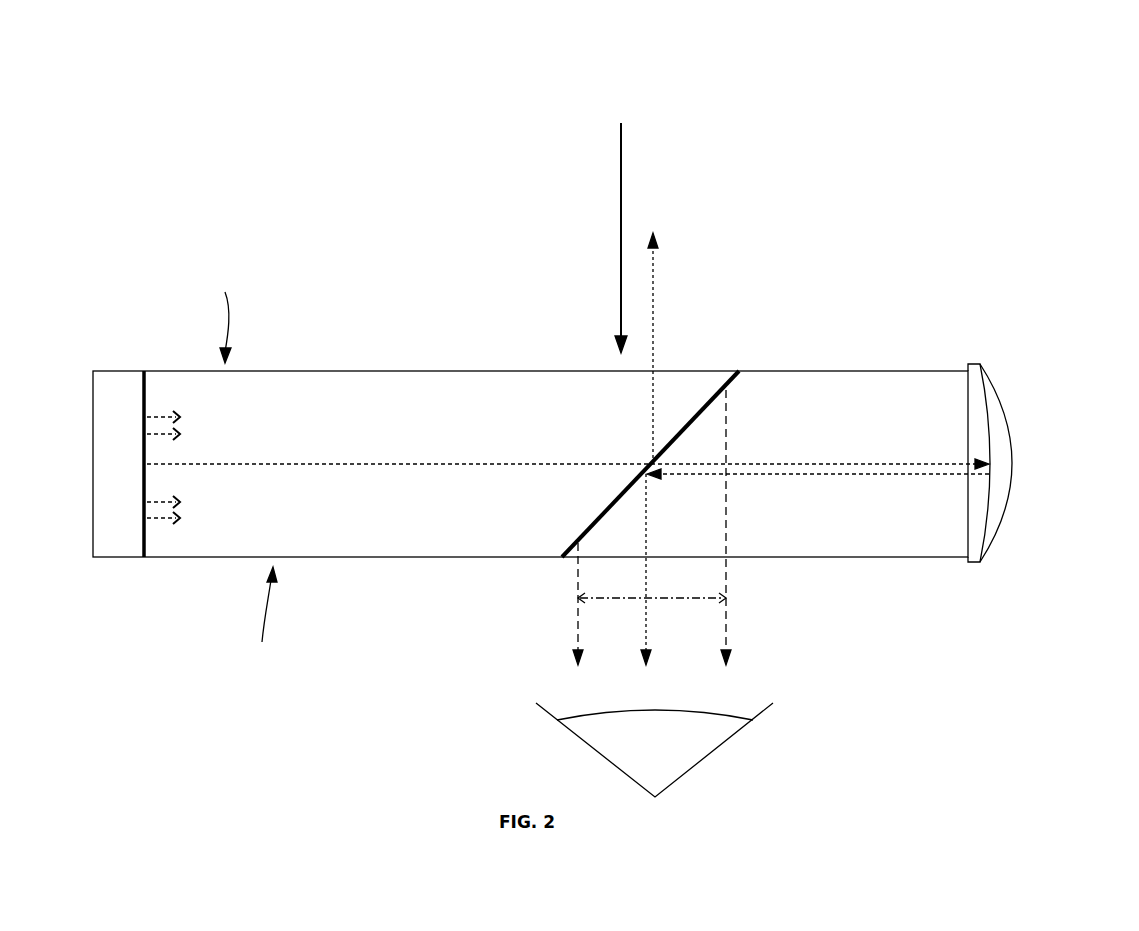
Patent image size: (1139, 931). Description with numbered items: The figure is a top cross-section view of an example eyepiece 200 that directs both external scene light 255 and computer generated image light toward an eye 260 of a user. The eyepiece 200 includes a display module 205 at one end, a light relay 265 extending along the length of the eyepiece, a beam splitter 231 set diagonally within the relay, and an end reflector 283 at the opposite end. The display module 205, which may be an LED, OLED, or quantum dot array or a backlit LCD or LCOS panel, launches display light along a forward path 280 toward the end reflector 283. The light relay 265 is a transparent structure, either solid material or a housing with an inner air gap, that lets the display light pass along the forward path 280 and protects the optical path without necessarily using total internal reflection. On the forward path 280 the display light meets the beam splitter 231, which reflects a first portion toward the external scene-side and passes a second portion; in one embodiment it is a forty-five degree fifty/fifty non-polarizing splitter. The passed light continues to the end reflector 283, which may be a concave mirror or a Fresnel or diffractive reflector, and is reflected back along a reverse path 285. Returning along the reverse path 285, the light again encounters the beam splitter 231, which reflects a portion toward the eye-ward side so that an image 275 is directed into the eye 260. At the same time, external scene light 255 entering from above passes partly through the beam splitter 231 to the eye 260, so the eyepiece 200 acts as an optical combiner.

The eyepiece 200 is at (935, 85).
The display module 205 is at (110, 370).
The beam splitter 231 is at (697, 405).
The external scene light 255 is at (621, 195).
The eye 260 is at (654, 750).
The light relay 265 is at (318, 371).
The image 275 is at (600, 595).
The forward path 280 is at (466, 466).
The end reflector 283 is at (988, 513).
The reverse path 285 is at (925, 476).